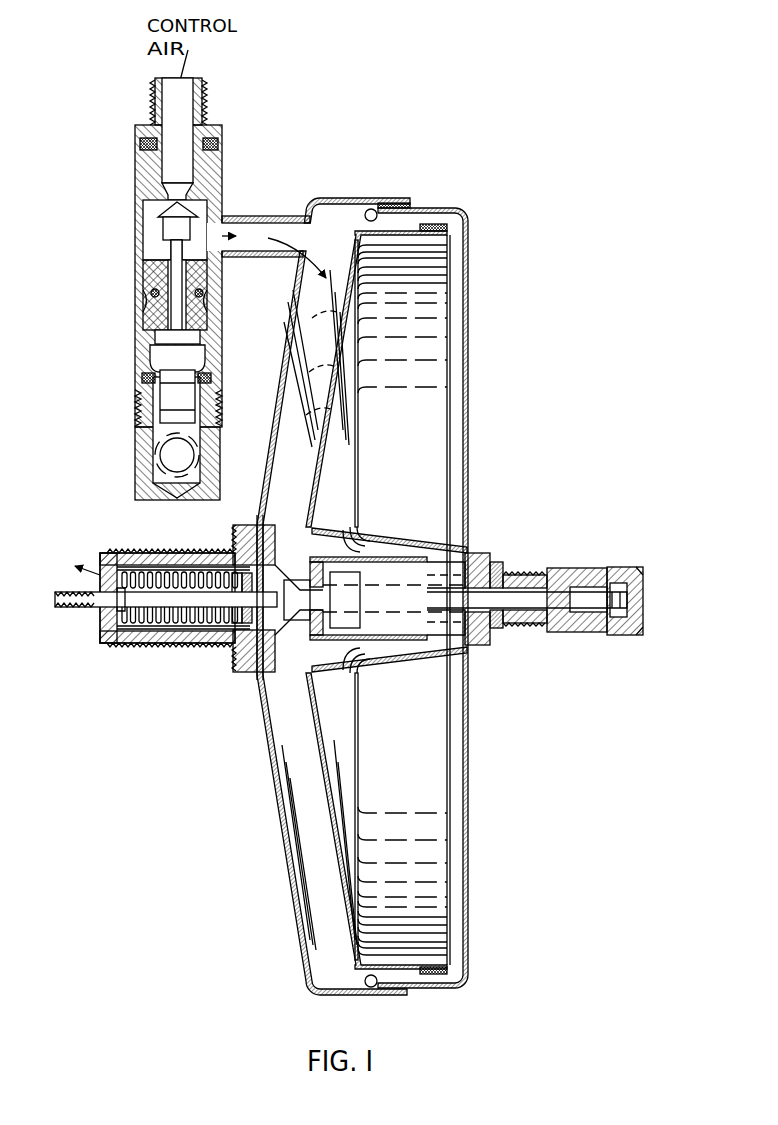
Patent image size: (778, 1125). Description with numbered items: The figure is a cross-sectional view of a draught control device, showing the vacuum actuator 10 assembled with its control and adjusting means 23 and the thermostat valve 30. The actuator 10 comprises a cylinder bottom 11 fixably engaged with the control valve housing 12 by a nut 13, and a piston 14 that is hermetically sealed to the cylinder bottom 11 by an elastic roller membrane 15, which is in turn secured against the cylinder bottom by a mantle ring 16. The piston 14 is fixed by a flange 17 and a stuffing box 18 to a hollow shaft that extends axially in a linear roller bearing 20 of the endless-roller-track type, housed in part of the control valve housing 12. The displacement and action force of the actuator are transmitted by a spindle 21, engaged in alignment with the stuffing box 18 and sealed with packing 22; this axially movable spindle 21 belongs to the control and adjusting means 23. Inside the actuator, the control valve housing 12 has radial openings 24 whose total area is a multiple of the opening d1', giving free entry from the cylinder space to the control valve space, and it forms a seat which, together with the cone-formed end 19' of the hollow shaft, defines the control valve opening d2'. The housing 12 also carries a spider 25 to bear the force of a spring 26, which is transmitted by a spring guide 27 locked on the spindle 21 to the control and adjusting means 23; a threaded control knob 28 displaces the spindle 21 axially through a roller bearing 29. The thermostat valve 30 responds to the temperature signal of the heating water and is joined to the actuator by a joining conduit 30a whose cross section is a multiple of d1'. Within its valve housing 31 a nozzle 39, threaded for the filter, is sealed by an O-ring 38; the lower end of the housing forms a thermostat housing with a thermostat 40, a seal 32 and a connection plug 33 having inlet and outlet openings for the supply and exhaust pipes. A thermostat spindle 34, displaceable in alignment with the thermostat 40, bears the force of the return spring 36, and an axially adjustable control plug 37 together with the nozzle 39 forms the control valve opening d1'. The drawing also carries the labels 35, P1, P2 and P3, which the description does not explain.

The vacuum actuator 10 is at (462, 590).
The cylinder bottom 11 is at (268, 745).
The control valve housing 12 is at (197, 638).
The nut 13 is at (237, 667).
The piston 14 is at (318, 728).
The elastic roller membrane 15 is at (365, 983).
The mantle ring 16 is at (467, 245).
The flange 17 is at (488, 557).
The stuffing box 18 is at (507, 565).
The cone-formed end of the hollow shaft 19' is at (391, 600).
The linear roller bearing 20 is at (388, 620).
The spindle 21 is at (497, 627).
The packing 22 is at (530, 627).
The control and adjusting means 23 is at (648, 585).
The radial openings 24 is at (298, 560).
The spider 25 is at (110, 612).
The spring 26 is at (193, 575).
The spring guide 27 is at (238, 590).
The control knob 28 is at (618, 568).
The roller bearing 29 is at (602, 568).
The thermostat valve 30 is at (208, 286).
The joining conduit 30a is at (270, 247).
The valve housing 31 is at (135, 168).
The seal 32 is at (142, 378).
The connection plug 33 is at (143, 465).
The thermostat spindle 34 is at (187, 330).
The valve guide bushing 35 is at (167, 267).
The return spring 36 is at (186, 306).
The control plug 37 is at (173, 227).
The O-ring 38 is at (218, 150).
The nozzle 39 is at (205, 98).
The thermostat 40 is at (177, 387).
The control valve opening d1' is at (231, 187).
The control valve opening d2' is at (293, 654).
The atmospheric pressure P1 is at (592, 425).
The working chamber pressure P2 is at (410, 465).
The spring chamber pressure P3 is at (150, 623).